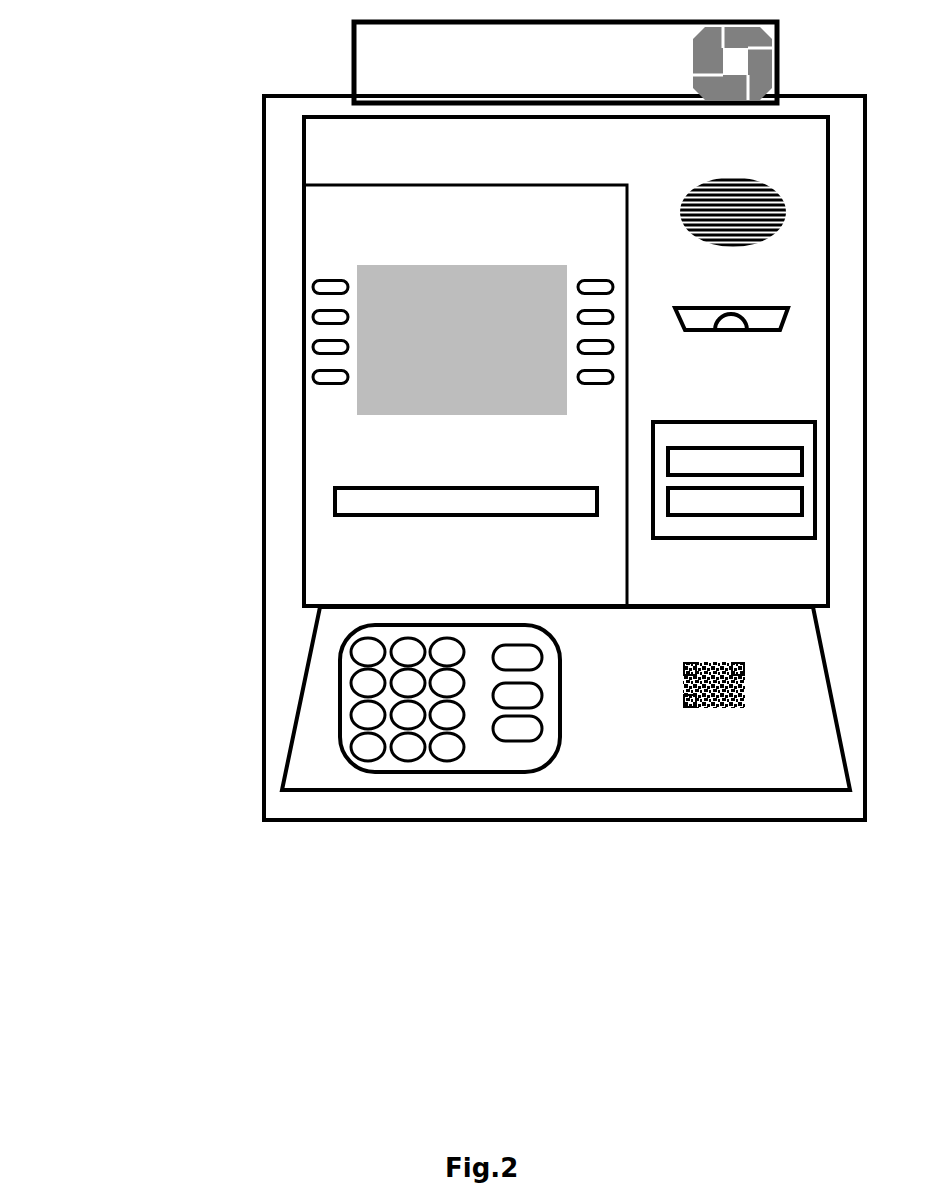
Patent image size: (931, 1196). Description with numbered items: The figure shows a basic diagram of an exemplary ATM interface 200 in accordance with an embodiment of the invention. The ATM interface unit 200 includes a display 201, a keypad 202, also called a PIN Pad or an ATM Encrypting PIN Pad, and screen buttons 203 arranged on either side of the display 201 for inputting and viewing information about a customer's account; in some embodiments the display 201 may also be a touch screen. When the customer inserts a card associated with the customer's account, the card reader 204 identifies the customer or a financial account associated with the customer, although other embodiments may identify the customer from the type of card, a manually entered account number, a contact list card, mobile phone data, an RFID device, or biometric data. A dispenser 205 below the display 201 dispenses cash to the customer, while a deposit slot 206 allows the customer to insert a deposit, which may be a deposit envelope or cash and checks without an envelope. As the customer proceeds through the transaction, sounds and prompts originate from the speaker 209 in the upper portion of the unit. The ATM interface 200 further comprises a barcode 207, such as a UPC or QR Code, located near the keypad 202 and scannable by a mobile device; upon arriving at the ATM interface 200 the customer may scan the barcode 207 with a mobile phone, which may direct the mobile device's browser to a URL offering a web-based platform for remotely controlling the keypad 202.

The ATM interface 200 is at (185, 28).
The display 201 is at (462, 265).
The keypad 202 is at (545, 622).
The screen buttons 203 is at (595, 267).
The card reader 204 is at (781, 332).
The dispenser 205 is at (440, 516).
The deposit slot 206 is at (706, 540).
The barcode 207 is at (748, 668).
The speaker 209 is at (776, 182).